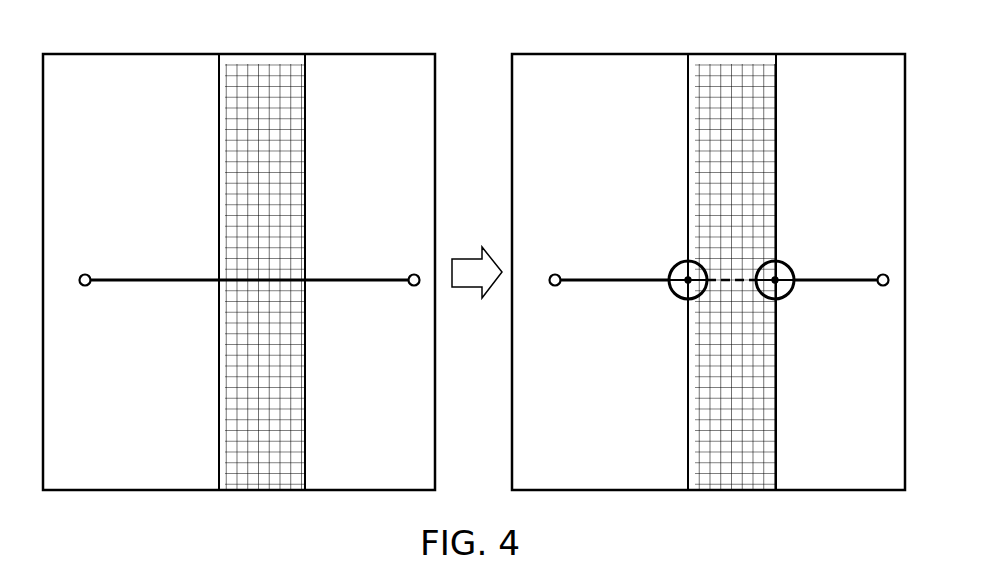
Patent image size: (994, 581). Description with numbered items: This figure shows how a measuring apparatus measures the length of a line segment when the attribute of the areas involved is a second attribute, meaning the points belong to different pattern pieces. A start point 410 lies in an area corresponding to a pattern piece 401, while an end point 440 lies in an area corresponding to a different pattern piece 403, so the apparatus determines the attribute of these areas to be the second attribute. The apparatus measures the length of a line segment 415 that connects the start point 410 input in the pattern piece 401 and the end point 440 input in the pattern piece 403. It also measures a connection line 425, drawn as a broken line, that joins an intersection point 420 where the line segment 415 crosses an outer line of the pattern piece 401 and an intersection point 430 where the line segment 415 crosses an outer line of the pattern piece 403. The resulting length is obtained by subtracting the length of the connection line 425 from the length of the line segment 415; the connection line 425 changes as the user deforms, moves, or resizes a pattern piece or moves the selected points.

The pattern piece 401 is at (142, 68).
The pattern piece 403 is at (372, 69).
The start point 410 is at (85, 289).
The line segment 415 is at (186, 276).
The intersection point 420 is at (681, 289).
The connection line 425 is at (742, 278).
The intersection point 430 is at (778, 286).
The end point 440 is at (413, 289).